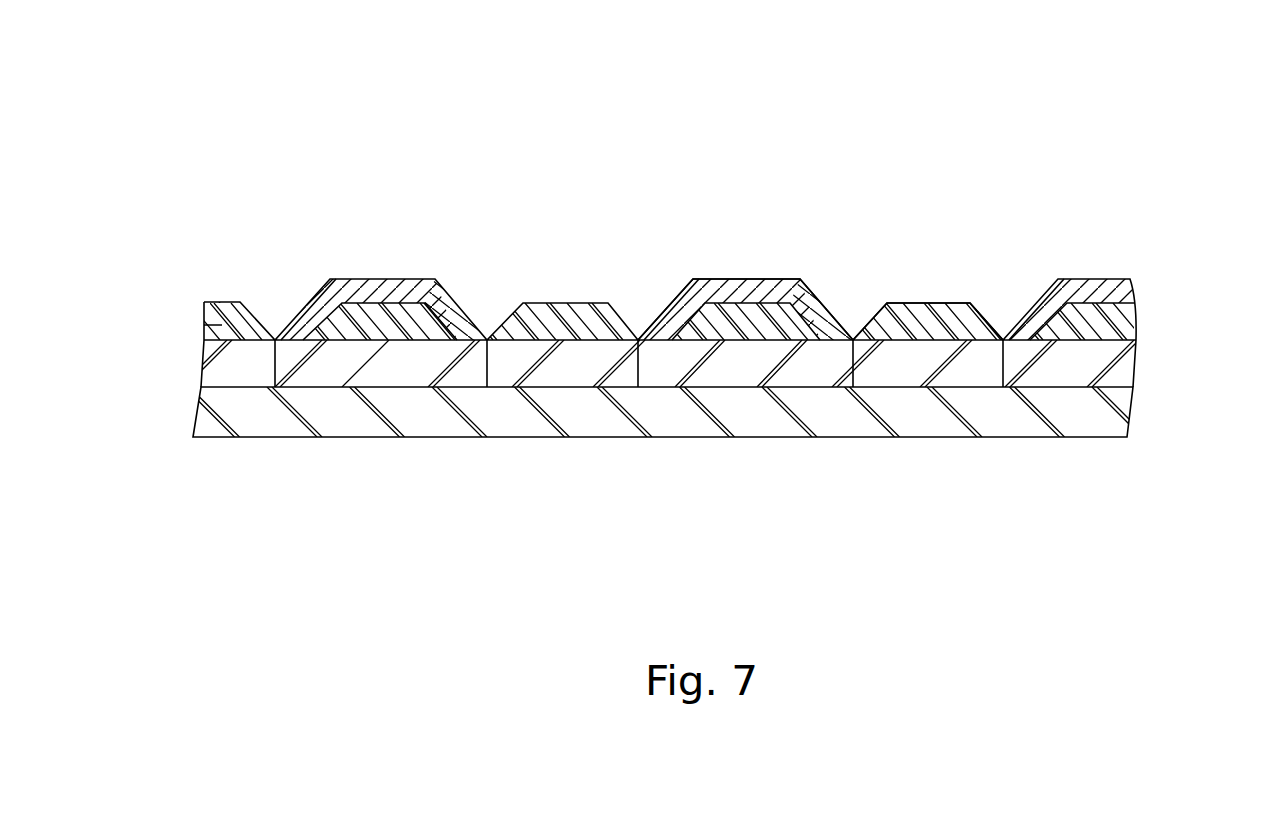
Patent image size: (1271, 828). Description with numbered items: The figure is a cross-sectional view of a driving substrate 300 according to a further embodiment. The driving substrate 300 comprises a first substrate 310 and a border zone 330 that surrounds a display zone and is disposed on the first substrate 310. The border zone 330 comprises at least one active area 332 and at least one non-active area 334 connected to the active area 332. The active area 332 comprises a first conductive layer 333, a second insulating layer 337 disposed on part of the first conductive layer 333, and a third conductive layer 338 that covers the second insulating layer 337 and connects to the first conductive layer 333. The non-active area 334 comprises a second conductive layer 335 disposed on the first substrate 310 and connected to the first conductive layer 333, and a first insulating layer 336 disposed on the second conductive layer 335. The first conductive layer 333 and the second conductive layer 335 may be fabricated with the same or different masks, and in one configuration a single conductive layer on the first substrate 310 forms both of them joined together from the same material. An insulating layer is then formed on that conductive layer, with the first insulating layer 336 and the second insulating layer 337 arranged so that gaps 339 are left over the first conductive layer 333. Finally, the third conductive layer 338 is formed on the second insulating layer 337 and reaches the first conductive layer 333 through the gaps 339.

The driving substrate 300 is at (173, 130).
The first substrate 310 is at (1133, 412).
The border zone 330 is at (1160, 280).
The active area 332 is at (638, 258).
The first conductive layer 333 is at (737, 372).
The non-active area 334 is at (1003, 258).
The second conductive layer 335 is at (921, 373).
The first insulating layer 336 is at (950, 316).
The second insulating layer 337 is at (716, 330).
The third conductive layer 338 is at (820, 322).
The gap 339 is at (627, 311).